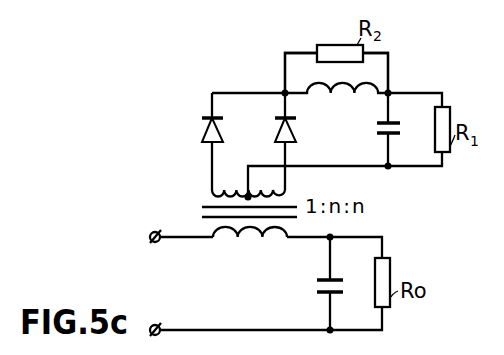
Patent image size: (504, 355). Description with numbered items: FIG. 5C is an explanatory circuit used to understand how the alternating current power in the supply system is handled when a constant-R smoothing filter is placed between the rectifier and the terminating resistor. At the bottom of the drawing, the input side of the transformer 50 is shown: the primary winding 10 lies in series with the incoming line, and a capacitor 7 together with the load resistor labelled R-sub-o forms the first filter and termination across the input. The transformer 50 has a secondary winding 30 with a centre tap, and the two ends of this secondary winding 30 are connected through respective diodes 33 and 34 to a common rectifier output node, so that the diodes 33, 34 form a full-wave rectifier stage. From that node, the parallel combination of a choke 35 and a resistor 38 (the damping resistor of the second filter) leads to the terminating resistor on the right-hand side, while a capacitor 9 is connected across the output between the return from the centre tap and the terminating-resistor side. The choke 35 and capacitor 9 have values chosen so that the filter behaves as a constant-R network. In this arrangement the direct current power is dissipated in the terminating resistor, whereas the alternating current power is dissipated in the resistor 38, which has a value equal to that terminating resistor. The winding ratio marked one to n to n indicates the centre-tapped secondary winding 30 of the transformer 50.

The resistor 38 is at (333, 45).
The diode 33 is at (202, 131).
The diode 34 is at (297, 128).
The choke 35 is at (345, 94).
The capacitor 9 is at (376, 134).
The secondary winding 30 is at (228, 191).
The transformer 50 is at (215, 200).
The primary winding 10 is at (250, 241).
The input capacitor 7 is at (320, 281).